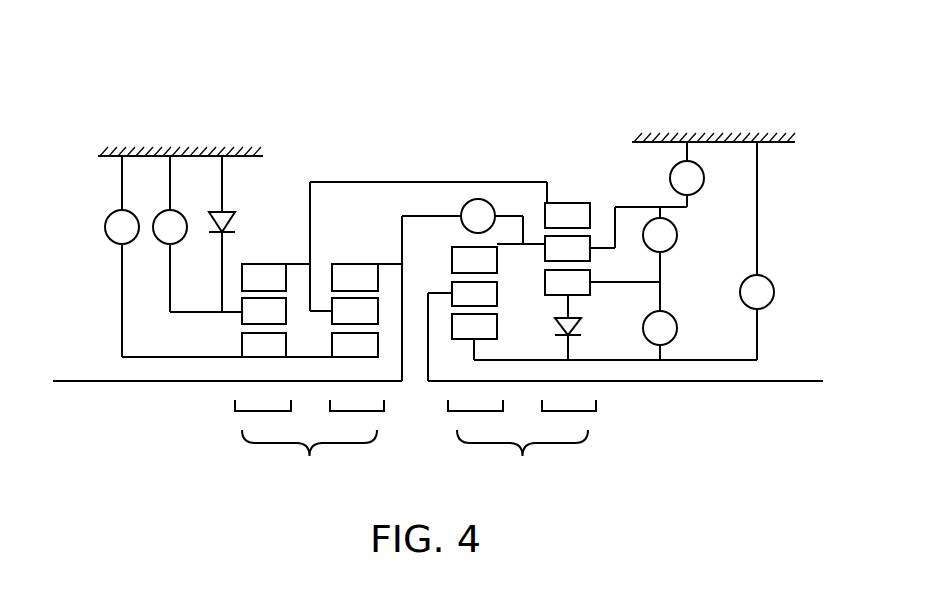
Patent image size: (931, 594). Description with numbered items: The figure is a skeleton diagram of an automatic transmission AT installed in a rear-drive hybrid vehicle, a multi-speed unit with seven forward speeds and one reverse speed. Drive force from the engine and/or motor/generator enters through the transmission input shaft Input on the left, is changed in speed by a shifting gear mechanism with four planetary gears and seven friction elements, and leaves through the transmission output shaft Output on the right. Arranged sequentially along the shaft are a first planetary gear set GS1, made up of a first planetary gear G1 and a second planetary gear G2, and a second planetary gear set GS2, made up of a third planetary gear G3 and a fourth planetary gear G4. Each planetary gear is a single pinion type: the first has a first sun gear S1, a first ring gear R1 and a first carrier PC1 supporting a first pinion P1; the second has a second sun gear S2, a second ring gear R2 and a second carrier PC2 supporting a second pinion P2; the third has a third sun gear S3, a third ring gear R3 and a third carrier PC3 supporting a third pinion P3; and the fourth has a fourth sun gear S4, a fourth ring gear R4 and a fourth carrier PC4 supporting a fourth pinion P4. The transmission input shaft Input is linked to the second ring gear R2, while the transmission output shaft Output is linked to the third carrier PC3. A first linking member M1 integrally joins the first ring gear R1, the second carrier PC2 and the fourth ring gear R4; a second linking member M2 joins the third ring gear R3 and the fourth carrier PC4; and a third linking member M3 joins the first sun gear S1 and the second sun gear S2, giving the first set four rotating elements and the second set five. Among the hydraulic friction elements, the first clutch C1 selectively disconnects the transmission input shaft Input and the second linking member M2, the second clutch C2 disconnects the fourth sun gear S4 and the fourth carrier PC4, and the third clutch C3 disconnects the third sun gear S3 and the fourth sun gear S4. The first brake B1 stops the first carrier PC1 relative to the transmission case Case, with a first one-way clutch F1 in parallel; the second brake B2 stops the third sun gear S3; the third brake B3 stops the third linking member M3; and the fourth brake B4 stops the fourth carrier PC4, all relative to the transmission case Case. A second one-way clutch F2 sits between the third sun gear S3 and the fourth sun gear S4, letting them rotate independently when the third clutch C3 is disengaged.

The automatic transmission AT is at (458, 41).
The transmission case Case is at (142, 152).
The first brake B1 is at (197, 234).
The second brake B2 is at (757, 251).
The third brake B3 is at (173, 256).
The fourth brake B4 is at (687, 174).
The first clutch C1 is at (474, 221).
The second clutch C2 is at (660, 259).
The third clutch C3 is at (660, 335).
The first one-way clutch F1 is at (240, 209).
The second one-way clutch F2 is at (583, 335).
The first linking member M1 is at (440, 181).
The second linking member M2 is at (510, 247).
The third linking member M3 is at (367, 298).
The first ring gear R1 is at (276, 277).
The second ring gear R2 is at (367, 277).
The third ring gear R3 is at (474, 260).
The fourth ring gear R4 is at (567, 215).
The first pinion P1 is at (264, 311).
The second pinion P2 is at (344, 311).
The third pinion P3 is at (462, 331).
The fourth pinion P4 is at (616, 234).
The first sun gear S1 is at (287, 345).
The second sun gear S2 is at (355, 345).
The third sun gear S3 is at (604, 337).
The fourth sun gear S4 is at (602, 294).
The first carrier PC1 is at (232, 312).
The second carrier PC2 is at (324, 312).
The third carrier PC3 is at (438, 292).
The fourth carrier PC4 is at (599, 250).
The first planetary gear G1 is at (263, 418).
The second planetary gear G2 is at (357, 418).
The third planetary gear G3 is at (475, 418).
The fourth planetary gear G4 is at (569, 418).
The first planetary gear set GS1 is at (309, 456).
The second planetary gear set GS2 is at (522, 456).
The transmission input shaft Input is at (98, 382).
The transmission output shaft Output is at (693, 382).